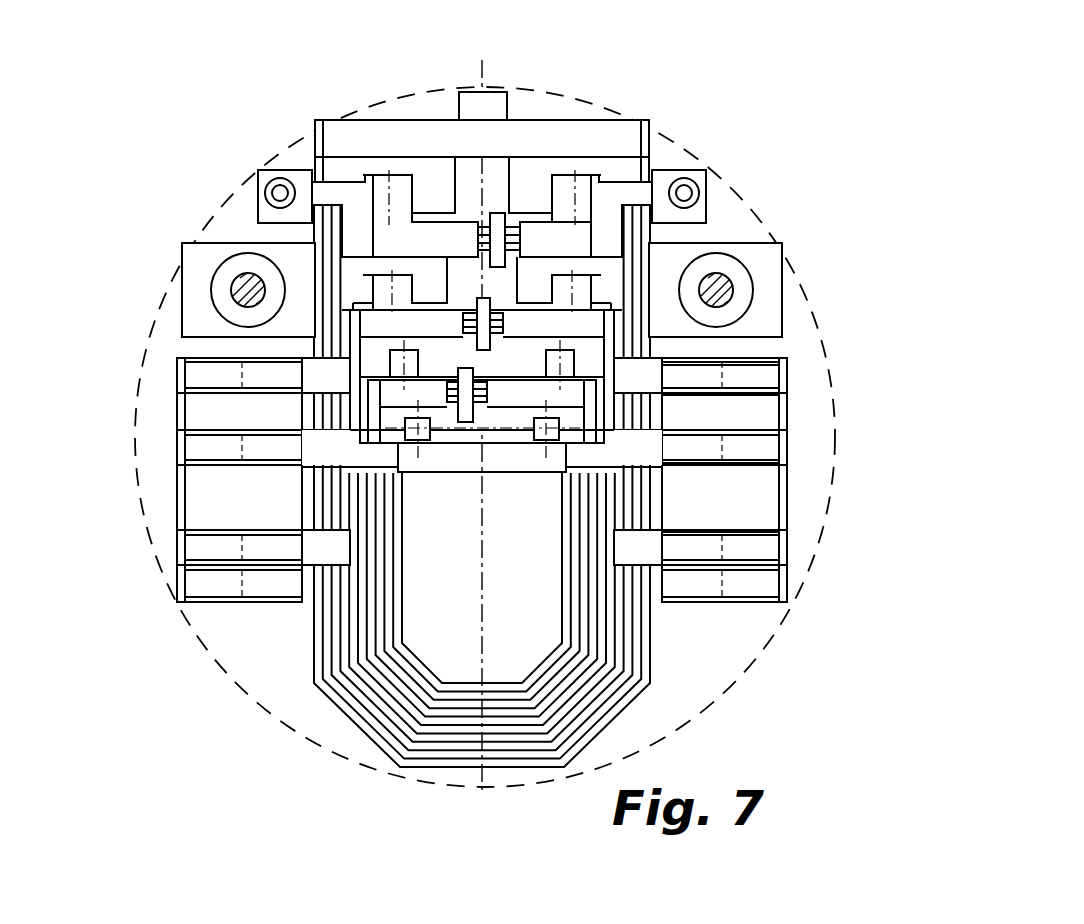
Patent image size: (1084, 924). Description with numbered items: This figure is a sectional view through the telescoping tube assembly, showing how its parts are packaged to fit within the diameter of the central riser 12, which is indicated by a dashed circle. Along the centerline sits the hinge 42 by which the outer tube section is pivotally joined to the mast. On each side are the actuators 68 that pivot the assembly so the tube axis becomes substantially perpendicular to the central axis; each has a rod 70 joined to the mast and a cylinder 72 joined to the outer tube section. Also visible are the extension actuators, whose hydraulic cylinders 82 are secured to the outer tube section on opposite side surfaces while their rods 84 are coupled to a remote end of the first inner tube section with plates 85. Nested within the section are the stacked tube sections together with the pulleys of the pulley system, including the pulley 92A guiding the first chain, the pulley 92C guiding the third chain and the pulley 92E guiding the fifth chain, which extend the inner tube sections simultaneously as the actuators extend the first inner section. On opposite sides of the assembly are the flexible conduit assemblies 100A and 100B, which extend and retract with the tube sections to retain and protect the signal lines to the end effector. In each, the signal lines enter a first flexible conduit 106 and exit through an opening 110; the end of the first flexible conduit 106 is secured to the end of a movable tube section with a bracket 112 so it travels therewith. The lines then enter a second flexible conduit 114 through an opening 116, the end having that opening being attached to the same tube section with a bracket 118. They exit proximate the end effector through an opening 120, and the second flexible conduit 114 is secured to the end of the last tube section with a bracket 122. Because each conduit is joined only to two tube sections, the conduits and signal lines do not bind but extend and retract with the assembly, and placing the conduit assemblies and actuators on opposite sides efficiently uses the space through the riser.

The central riser 12 is at (838, 343).
The hinge 42 is at (508, 95).
The actuators 68 is at (201, 265).
The rods 70 is at (231, 293).
The cylinder 72 is at (211, 281).
The hydraulic cylinders 82 is at (268, 192).
The rods 84 is at (278, 168).
The plates 85 is at (280, 183).
The pulley 92A is at (499, 212).
The pulley 92C is at (480, 296).
The pulley 92E is at (464, 414).
The flexible conduit assembly 100A is at (798, 507).
The flexible conduit assembly 100B is at (160, 497).
The first flexible conduit 106 is at (757, 358).
The opening 110 is at (755, 375).
The bracket 112 is at (650, 372).
The second flexible conduit 114 is at (750, 423).
The opening 116 is at (750, 545).
The bracket 118 is at (633, 550).
The opening 120 is at (752, 448).
The bracket 122 is at (633, 453).